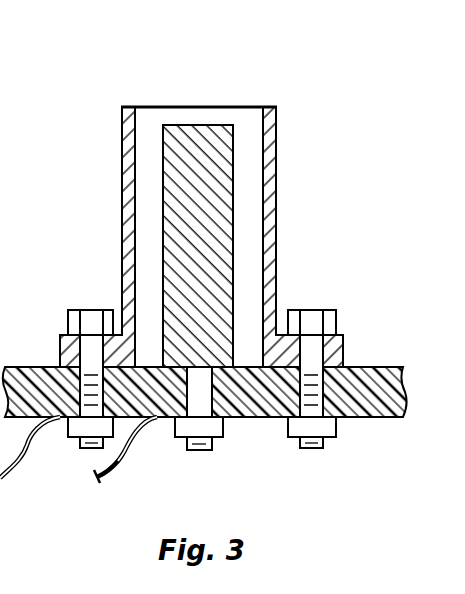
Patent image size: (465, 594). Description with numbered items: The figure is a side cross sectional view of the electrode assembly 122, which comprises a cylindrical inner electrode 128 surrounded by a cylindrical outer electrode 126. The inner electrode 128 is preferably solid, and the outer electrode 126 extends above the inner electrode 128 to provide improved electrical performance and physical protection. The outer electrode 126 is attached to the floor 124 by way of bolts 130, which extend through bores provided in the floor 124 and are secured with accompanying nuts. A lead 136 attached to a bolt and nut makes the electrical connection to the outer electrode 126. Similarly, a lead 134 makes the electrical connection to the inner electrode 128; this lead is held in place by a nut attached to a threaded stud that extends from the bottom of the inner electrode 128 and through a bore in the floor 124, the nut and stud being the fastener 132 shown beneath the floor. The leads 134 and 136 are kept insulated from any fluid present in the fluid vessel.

The electrode assembly 122 is at (238, 200).
The floor 124 is at (377, 398).
The outer electrode 126 is at (277, 147).
The inner electrode 128 is at (202, 124).
The bolts 130 is at (90, 310).
The center bolt 132 is at (203, 427).
The lead 134 is at (132, 462).
The lead 136 is at (26, 455).